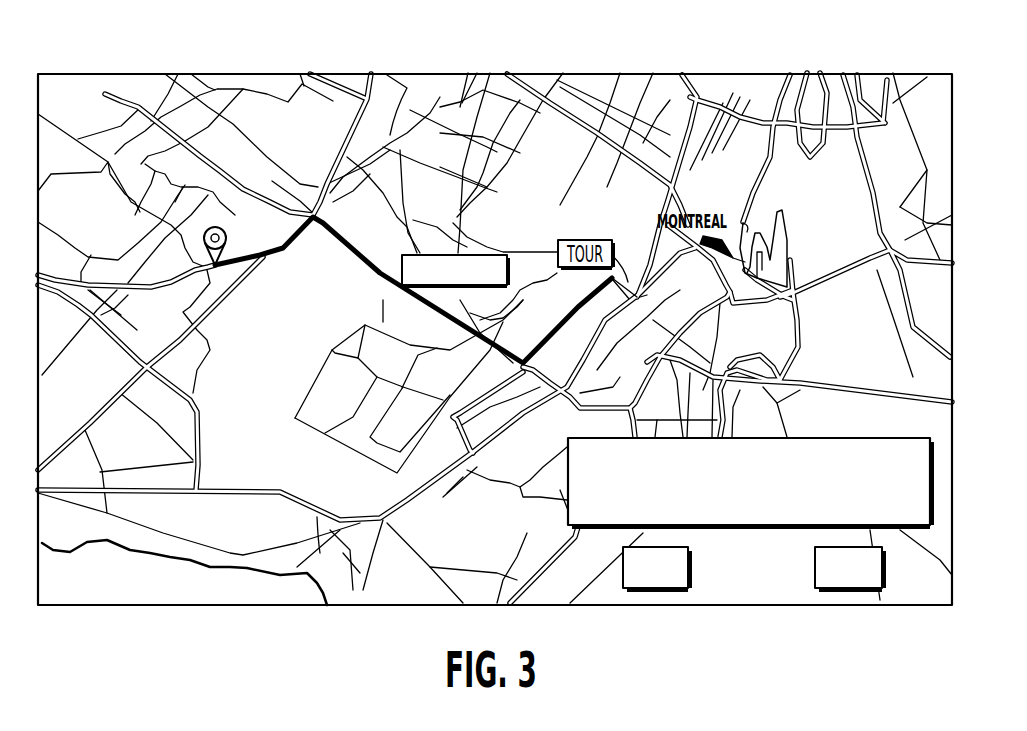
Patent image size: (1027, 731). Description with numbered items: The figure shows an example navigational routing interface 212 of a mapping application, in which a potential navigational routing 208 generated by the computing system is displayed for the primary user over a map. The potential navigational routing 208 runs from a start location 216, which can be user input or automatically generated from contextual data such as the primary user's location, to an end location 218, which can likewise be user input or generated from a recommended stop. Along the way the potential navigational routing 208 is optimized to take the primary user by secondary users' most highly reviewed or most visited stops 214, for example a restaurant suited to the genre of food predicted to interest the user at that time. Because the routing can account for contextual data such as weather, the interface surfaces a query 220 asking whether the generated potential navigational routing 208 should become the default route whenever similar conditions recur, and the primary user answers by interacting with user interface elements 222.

The potential navigational routing 208 is at (612, 248).
The navigational routing interface 212 is at (427, 74).
The stops 214 is at (442, 255).
The start location 216 is at (225, 239).
The end location 218 is at (745, 222).
The query 220 is at (920, 527).
The user interface elements 222 is at (850, 592).